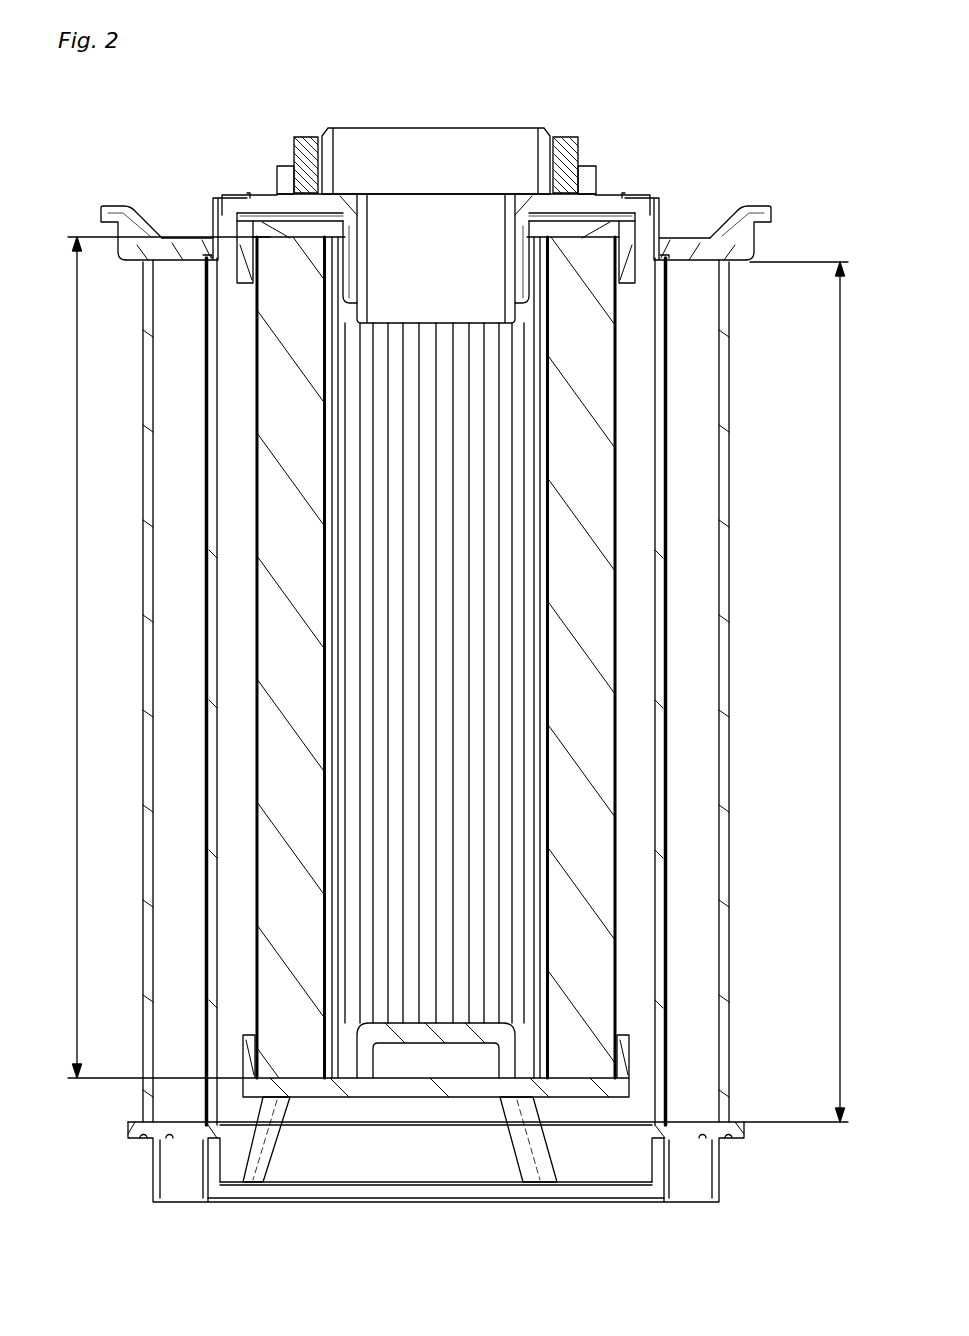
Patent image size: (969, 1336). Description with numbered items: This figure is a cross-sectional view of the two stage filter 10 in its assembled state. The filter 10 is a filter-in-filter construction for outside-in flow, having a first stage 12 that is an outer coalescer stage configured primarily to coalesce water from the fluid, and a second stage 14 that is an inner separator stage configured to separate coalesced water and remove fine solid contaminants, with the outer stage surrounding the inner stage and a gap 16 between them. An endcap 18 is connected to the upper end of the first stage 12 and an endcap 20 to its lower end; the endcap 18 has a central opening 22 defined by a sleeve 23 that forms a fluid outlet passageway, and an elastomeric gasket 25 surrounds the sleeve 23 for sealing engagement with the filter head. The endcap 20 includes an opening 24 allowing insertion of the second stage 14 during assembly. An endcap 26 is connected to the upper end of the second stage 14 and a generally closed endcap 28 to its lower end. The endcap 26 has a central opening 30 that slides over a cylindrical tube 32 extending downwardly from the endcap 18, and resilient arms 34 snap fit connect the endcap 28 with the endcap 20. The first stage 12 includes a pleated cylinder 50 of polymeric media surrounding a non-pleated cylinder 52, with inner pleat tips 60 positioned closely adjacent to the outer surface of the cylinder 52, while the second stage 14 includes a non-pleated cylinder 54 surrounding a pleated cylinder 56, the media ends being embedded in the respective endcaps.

The two stage filter 10 is at (740, 112).
The first stage 12 is at (748, 562).
The second stage 14 is at (243, 658).
The gap 16 is at (237, 470).
The endcap 18 is at (668, 240).
The endcap 20 is at (742, 1130).
The central opening 22 is at (410, 160).
The sleeve 23 is at (322, 128).
The opening 24 is at (593, 1170).
The elastomeric gasket 25 is at (571, 137).
The endcap 26 is at (255, 218).
The endcap 28 is at (253, 1080).
The central opening 30 is at (505, 268).
The cylindrical tube 32 is at (497, 272).
The resilient arms 34 is at (277, 1150).
The pleated cylinder 50 is at (728, 482).
The non-pleated cylinder 52 is at (666, 400).
The non-pleated cylinder 54 is at (257, 400).
The pleated cylinder 56 is at (275, 550).
The inner pleat tips 60 is at (667, 880).